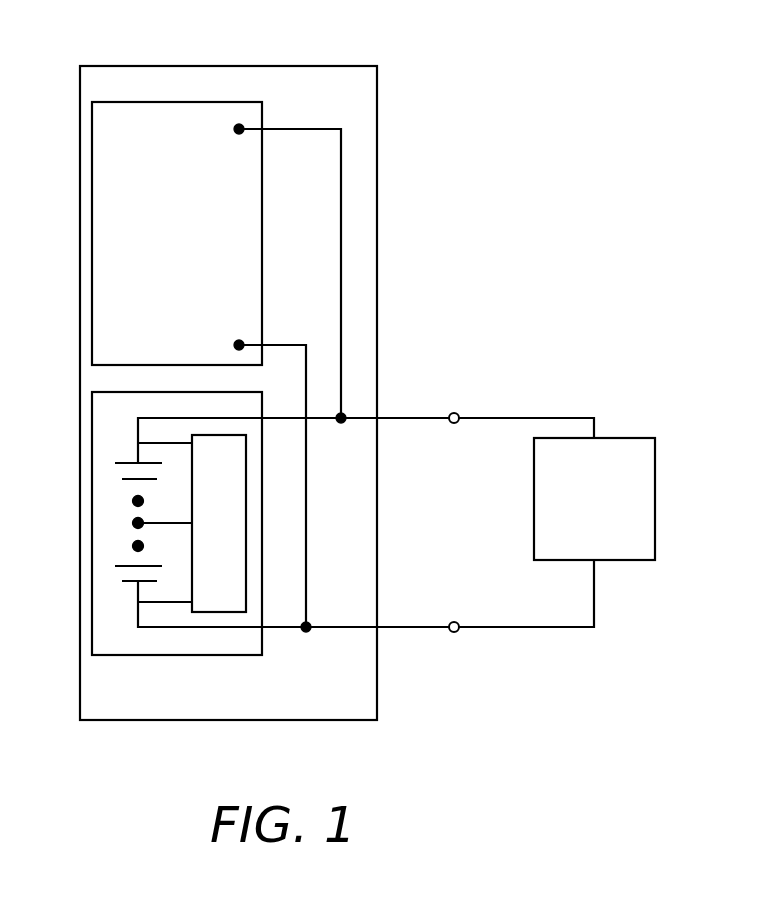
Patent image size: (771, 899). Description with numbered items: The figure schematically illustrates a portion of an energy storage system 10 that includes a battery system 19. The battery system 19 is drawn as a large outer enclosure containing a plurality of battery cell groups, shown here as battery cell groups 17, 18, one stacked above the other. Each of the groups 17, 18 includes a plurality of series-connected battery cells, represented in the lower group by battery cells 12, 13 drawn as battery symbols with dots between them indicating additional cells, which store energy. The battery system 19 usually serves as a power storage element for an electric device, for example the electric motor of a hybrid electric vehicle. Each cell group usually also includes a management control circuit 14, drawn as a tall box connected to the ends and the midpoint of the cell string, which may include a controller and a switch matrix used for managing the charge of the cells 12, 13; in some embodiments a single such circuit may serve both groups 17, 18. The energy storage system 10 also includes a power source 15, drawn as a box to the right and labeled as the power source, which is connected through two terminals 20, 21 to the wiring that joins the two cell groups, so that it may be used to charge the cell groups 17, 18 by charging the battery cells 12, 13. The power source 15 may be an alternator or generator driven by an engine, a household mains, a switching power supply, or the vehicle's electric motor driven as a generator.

The energy storage system 10 is at (258, 782).
The battery cell 12 is at (128, 473).
The battery cell 13 is at (128, 573).
The management control circuit 14 is at (213, 612).
The power source 15 is at (613, 560).
The battery cell group 17 is at (92, 435).
The battery cell group 18 is at (92, 125).
The battery system 19 is at (112, 65).
The first terminal 20 is at (458, 413).
The second terminal 21 is at (458, 632).